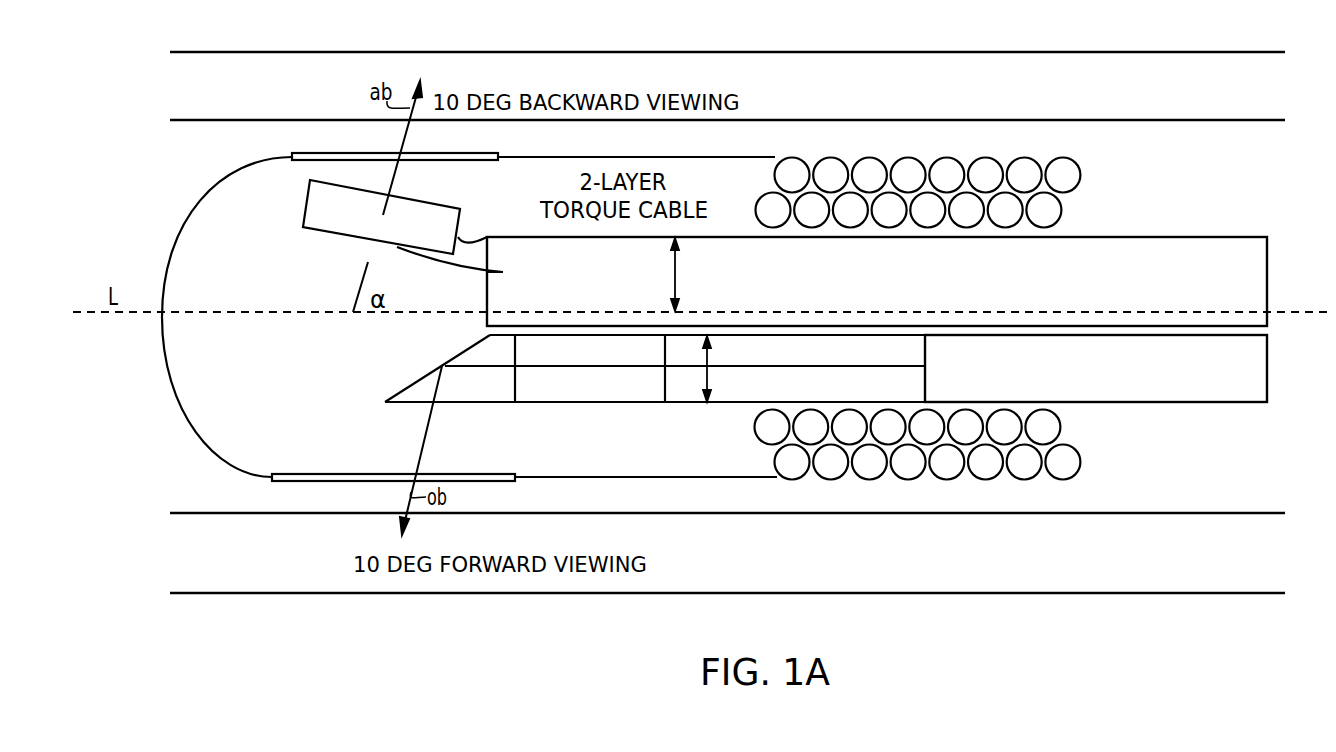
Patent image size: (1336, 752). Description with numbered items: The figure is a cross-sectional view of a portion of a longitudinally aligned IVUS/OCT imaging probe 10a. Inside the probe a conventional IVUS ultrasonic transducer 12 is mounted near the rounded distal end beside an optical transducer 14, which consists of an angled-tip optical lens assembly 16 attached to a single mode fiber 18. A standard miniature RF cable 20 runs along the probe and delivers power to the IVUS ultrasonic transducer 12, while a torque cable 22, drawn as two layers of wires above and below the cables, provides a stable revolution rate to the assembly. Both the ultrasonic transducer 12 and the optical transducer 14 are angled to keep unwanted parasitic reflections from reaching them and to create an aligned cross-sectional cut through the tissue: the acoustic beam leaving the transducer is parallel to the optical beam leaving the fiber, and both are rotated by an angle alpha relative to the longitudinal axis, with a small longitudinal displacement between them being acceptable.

The imaging probe 10a is at (210, 190).
The IVUS ultrasonic transducer 12 is at (305, 200).
The optical transducer 14 is at (580, 405).
The angled-tip optical lens assembly 16 is at (422, 377).
The single mode fiber 18 is at (1197, 376).
The RF cable 20 is at (1196, 289).
The torque cable 22 is at (952, 158).